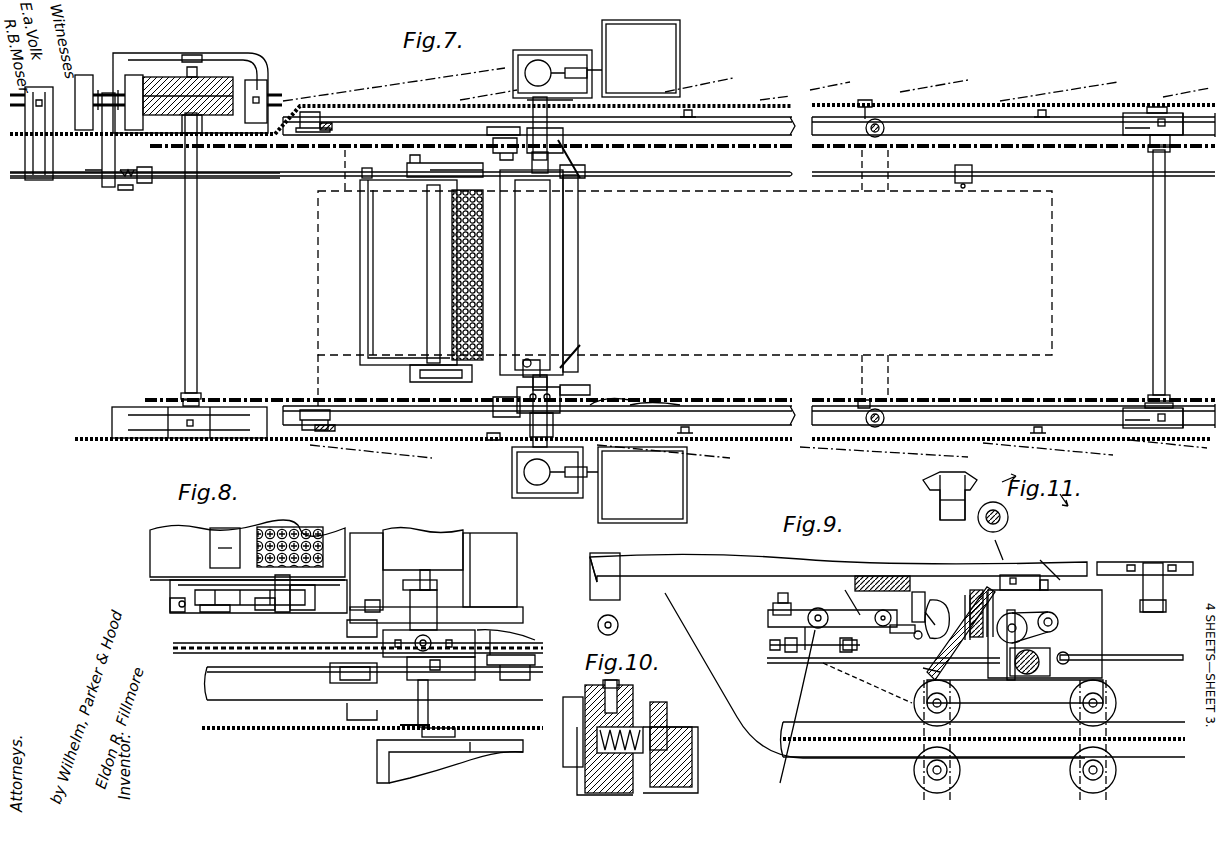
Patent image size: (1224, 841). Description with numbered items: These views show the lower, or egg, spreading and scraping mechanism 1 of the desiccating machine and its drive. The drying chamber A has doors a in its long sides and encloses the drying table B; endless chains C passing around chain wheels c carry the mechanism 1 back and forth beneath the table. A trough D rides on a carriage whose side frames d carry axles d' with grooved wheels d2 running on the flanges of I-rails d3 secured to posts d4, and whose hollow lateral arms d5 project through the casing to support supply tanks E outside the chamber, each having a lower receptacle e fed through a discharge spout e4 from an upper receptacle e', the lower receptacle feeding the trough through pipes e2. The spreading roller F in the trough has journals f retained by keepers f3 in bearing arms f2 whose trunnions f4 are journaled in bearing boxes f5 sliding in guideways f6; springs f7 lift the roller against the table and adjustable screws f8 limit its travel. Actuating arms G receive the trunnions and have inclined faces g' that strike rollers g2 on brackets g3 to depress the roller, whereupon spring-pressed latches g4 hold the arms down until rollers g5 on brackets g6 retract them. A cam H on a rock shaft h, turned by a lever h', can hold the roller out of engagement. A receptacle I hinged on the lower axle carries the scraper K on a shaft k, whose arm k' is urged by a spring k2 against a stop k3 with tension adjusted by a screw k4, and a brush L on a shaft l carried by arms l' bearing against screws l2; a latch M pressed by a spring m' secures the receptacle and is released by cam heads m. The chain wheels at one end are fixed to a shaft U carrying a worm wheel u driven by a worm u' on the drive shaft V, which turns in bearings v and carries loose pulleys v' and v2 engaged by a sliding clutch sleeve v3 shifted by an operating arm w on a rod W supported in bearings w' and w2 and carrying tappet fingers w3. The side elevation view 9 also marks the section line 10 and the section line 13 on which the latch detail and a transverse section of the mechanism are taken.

In FIG. 7, the doors a is at (392, 104).
In FIG. 7, the drying chamber A is at (843, 440).
In FIG. 8, the drying chamber A is at (285, 732).
In FIG. 7, the drying table B is at (685, 280).
In FIG. 9, the drying table B is at (725, 560).
In FIG. 7, the endless chains C is at (740, 408).
In FIG. 8, the endless chains C is at (173, 650).
In FIG. 9, the endless chains C is at (775, 665).
In FIG. 7, the chain wheels c is at (165, 190).
In FIG. 7, the trough D is at (580, 312).
In FIG. 8, the trough D is at (490, 533).
In FIG. 9, the trough D is at (1045, 634).
In FIG. 7, the carriage side frames d is at (584, 280).
In FIG. 8, the carriage side frames d is at (436, 612).
In FIG. 9, the carriage side frames d is at (1015, 698).
In FIG. 10, the carriage side frames d is at (590, 740).
In FIG. 11, the carriage side frames d is at (941, 493).
In FIG. 7, the axles d' is at (613, 387).
In FIG. 8, the axles d' is at (508, 637).
In FIG. 9, the axles d' is at (983, 723).
In FIG. 7, the grooved wheels d2 is at (640, 403).
In FIG. 8, the grooved wheels d2 is at (520, 672).
In FIG. 9, the grooved wheels d2 is at (1118, 710).
In FIG. 7, the I-rails d3 is at (936, 138).
In FIG. 8, the I-rails d3 is at (218, 686).
In FIG. 9, the I-rails d3 is at (793, 722).
In FIG. 7, the posts d4 is at (1040, 110).
In FIG. 8, the posts d4 is at (408, 682).
In FIG. 7, the lateral arms d5 is at (533, 110).
In FIG. 8, the lateral arms d5 is at (436, 708).
In FIG. 9, the lateral arms d5 is at (1040, 688).
In FIG. 7, the supply tanks E is at (572, 275).
In FIG. 8, the supply tanks E is at (418, 765).
In FIG. 7, the lower receptacle e is at (540, 260).
In FIG. 8, the lower receptacle e is at (479, 761).
In FIG. 7, the upper receptacle e' is at (642, 271).
In FIG. 9, the pipes e2 is at (1060, 655).
In FIG. 7, the discharge spout e4 is at (575, 68).
In FIG. 7, the spreading roller F is at (531, 272).
In FIG. 8, the spreading roller F is at (423, 549).
In FIG. 8, the journals f is at (372, 598).
In FIG. 7, the bearing arms f2 is at (545, 175).
In FIG. 8, the bearing arms f2 is at (421, 610).
In FIG. 9, the bearing arms f2 is at (1020, 575).
In FIG. 10, the bearing arms f2 is at (573, 710).
In FIG. 7, the keepers f3 is at (547, 350).
In FIG. 8, the keepers f3 is at (428, 572).
In FIG. 9, the trunnions f4 is at (1025, 622).
In FIG. 8, the bearing boxes f5 is at (435, 632).
In FIG. 9, the bearing boxes f5 is at (985, 592).
In FIG. 10, the bearing boxes f5 is at (575, 752).
In FIG. 9, the guideways f6 is at (1060, 585).
In FIG. 9, the springs f7 is at (1025, 662).
In FIG. 8, the adjustable screws f8 is at (432, 640).
In FIG. 9, the adjustable screws f8 is at (1050, 612).
In FIG. 7, the actuating arms G is at (565, 150).
In FIG. 8, the actuating arms G is at (410, 680).
In FIG. 9, the actuating arms G is at (960, 600).
In FIG. 10, the actuating arms G is at (690, 770).
In FIG. 8, the inclined faces g' is at (338, 682).
In FIG. 9, the inclined faces g' is at (911, 642).
In FIG. 7, the rollers g2 is at (300, 415).
In FIG. 9, the rollers g2 is at (618, 625).
In FIG. 7, the brackets g3 is at (328, 123).
In FIG. 9, the brackets g3 is at (620, 590).
In FIG. 7, the spring-pressed latch g4 is at (515, 415).
In FIG. 8, the spring-pressed latch g4 is at (420, 670).
In FIG. 9, the spring-pressed latch g4 is at (930, 665).
In FIG. 10, the spring-pressed latch g4 is at (663, 710).
In FIG. 11, the spring-pressed latch g4 is at (940, 498).
In FIG. 7, the rollers g5 is at (867, 135).
In FIG. 9, the rollers g5 is at (1163, 608).
In FIG. 11, the rollers g5 is at (1008, 517).
In FIG. 7, the brackets g6 is at (860, 395).
In FIG. 9, the brackets g6 is at (1163, 586).
In FIG. 7, the cam H is at (535, 160).
In FIG. 8, the cam H is at (347, 712).
In FIG. 9, the cam H is at (937, 618).
In FIG. 8, the rock shaft h is at (353, 633).
In FIG. 9, the rock shaft h is at (916, 609).
In FIG. 8, the lever h' is at (320, 680).
In FIG. 9, the lever h' is at (973, 591).
In FIG. 7, the receptacle I is at (360, 320).
In FIG. 8, the receptacle I is at (175, 530).
In FIG. 9, the receptacle I is at (700, 622).
In FIG. 7, the scraper K is at (427, 233).
In FIG. 8, the scraper K is at (225, 528).
In FIG. 9, the scraper K is at (830, 615).
In FIG. 8, the scraper shaft k is at (242, 575).
In FIG. 9, the scraper shaft k is at (828, 618).
In FIG. 8, the arm k' is at (276, 609).
In FIG. 9, the arm k' is at (813, 664).
In FIG. 9, the spring k2 is at (773, 612).
In FIG. 8, the adjustable stop k3 is at (265, 610).
In FIG. 9, the adjustable stop k3 is at (850, 652).
In FIG. 8, the adjustable screw k4 is at (215, 610).
In FIG. 9, the adjustable screw k4 is at (770, 645).
In FIG. 7, the brush L is at (452, 258).
In FIG. 8, the brush L is at (292, 527).
In FIG. 9, the brush L is at (900, 576).
In FIG. 9, the brush shaft l is at (879, 623).
In FIG. 7, the arms l' is at (438, 240).
In FIG. 8, the arms l' is at (301, 613).
In FIG. 9, the arms l' is at (857, 576).
In FIG. 8, the adjustable screws l2 is at (170, 605).
In FIG. 9, the adjustable screws l2 is at (778, 598).
In FIG. 8, the latch M is at (410, 585).
In FIG. 9, the latch M is at (895, 633).
In FIG. 8, the cam heads m is at (366, 571).
In FIG. 9, the spring m' is at (919, 582).
In FIG. 7, the shaft U is at (185, 310).
In FIG. 7, the worm wheel u is at (195, 67).
In FIG. 7, the worm u' is at (209, 124).
In FIG. 7, the drive shaft V is at (262, 88).
In FIG. 7, the bearings v is at (148, 104).
In FIG. 7, the pulley v' is at (65, 112).
In FIG. 7, the pulley v2 is at (135, 78).
In FIG. 7, the clutch sleeve v3 is at (92, 77).
In FIG. 7, the rod W is at (265, 180).
In FIG. 7, the operating arm w is at (96, 140).
In FIG. 7, the bearing w' is at (145, 189).
In FIG. 7, the bearing w2 is at (1153, 180).
In FIG. 7, the tappet finger w3 is at (362, 178).
In FIG. 7, the lower spreading and scraping mechanism 1 is at (386, 272).
In FIG. 8, the lower spreading and scraping mechanism 1 is at (248, 541).
In FIG. 9, the lower spreading and scraping mechanism 1 is at (840, 666).
In FIG. 9, the arm 9 is at (1060, 645).
In FIG. 9, the section line 10— 10 is at (985, 680).
In FIG. 9, the section line 13— 13 is at (808, 610).